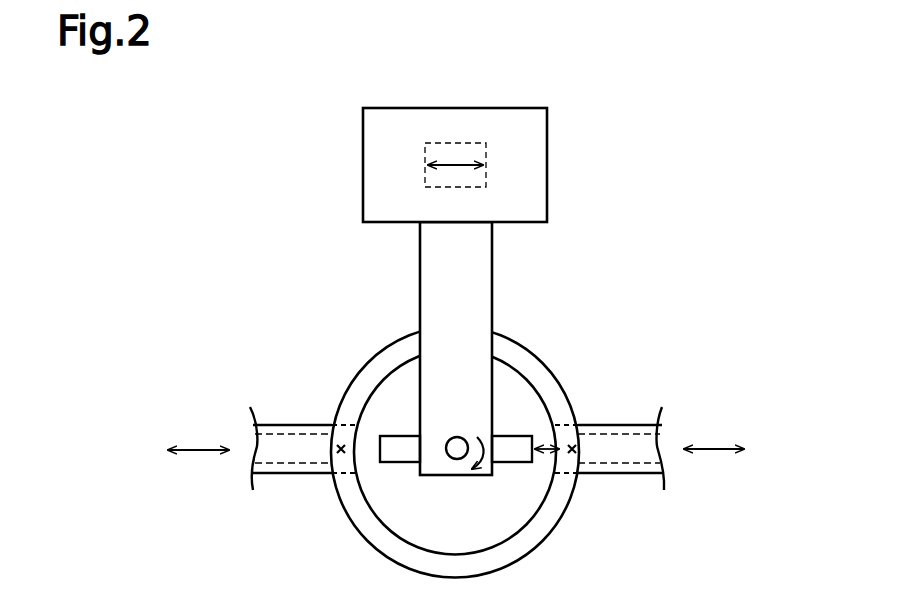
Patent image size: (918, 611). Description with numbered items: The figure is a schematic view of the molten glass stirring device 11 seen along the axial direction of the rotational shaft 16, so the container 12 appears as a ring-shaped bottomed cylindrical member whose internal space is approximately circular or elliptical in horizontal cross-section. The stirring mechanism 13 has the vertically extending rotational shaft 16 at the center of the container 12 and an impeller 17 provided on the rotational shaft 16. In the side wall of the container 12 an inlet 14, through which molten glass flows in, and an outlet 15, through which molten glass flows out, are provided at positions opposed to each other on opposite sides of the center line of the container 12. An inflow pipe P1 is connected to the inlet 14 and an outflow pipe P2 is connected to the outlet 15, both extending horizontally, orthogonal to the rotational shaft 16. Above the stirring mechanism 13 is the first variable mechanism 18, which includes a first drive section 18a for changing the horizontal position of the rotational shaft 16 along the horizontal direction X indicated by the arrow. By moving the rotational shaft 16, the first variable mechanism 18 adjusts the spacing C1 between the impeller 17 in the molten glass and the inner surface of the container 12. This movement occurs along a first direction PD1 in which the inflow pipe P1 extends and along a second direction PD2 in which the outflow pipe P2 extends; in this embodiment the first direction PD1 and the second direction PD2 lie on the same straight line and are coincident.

The molten glass stirring device 11 is at (453, 326).
The container 12 is at (371, 351).
The stirring mechanism 13 is at (494, 243).
The inlet 14 is at (333, 445).
The outlet 15 is at (581, 445).
The rotational shaft 16 is at (453, 461).
The impeller 17 is at (512, 462).
The first variable mechanism 18 is at (547, 108).
The first drive section 18a is at (486, 143).
The horizontal direction X is at (453, 163).
The spacing C1 is at (545, 447).
The inflow pipe P1 is at (268, 424).
The outflow pipe P2 is at (637, 424).
The first direction PD1 is at (197, 447).
The second direction PD2 is at (713, 447).